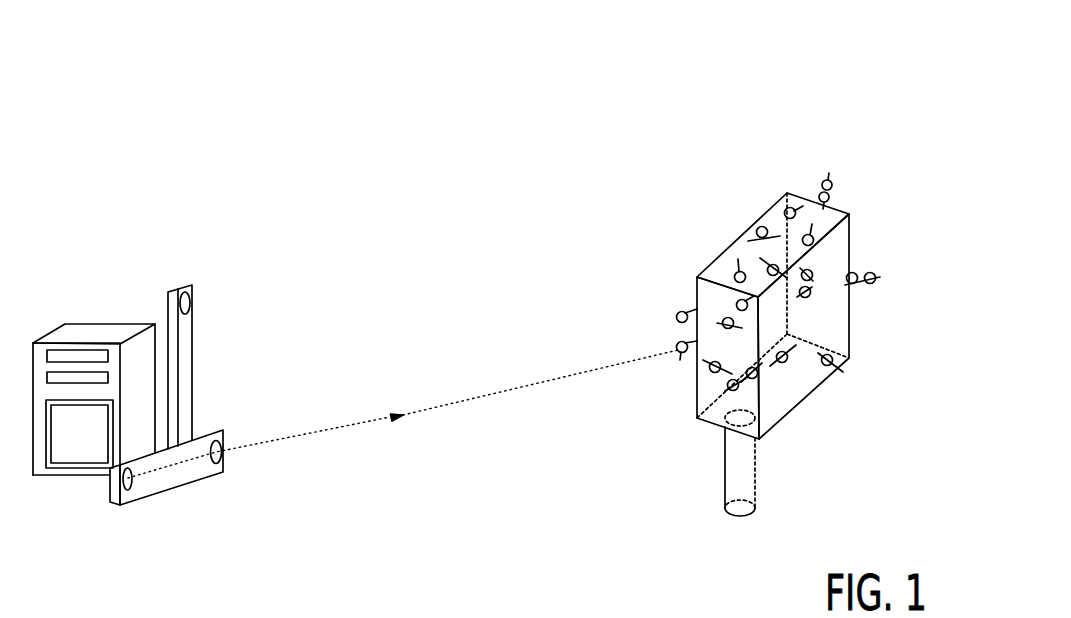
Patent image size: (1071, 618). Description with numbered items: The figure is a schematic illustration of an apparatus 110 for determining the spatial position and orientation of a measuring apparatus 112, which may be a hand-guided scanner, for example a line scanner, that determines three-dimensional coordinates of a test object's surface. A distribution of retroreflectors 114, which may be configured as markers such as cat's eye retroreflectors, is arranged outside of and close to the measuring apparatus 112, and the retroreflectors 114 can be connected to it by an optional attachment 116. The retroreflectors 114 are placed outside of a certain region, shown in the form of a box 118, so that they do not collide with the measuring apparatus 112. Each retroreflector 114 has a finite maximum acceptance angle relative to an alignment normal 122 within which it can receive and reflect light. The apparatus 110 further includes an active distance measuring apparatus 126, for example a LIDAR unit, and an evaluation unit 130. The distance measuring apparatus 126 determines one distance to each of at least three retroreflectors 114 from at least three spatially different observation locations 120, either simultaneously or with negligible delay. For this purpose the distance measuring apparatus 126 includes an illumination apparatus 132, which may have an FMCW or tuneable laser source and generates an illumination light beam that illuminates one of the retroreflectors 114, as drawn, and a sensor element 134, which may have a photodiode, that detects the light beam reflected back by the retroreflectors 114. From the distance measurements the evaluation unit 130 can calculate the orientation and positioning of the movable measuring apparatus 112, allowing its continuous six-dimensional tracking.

The apparatus 110 is at (546, 160).
The measuring apparatus 112 is at (863, 163).
The retroreflectors 114 is at (832, 354).
The attachment 116 is at (773, 236).
The box 118 is at (853, 230).
The observation locations 120 is at (197, 296).
The alignment normal 122 is at (748, 238).
The active distance measuring apparatus 126 is at (217, 277).
The evaluation unit 130 is at (95, 333).
The illumination apparatus 132 is at (238, 420).
The sensor element 134 is at (238, 420).